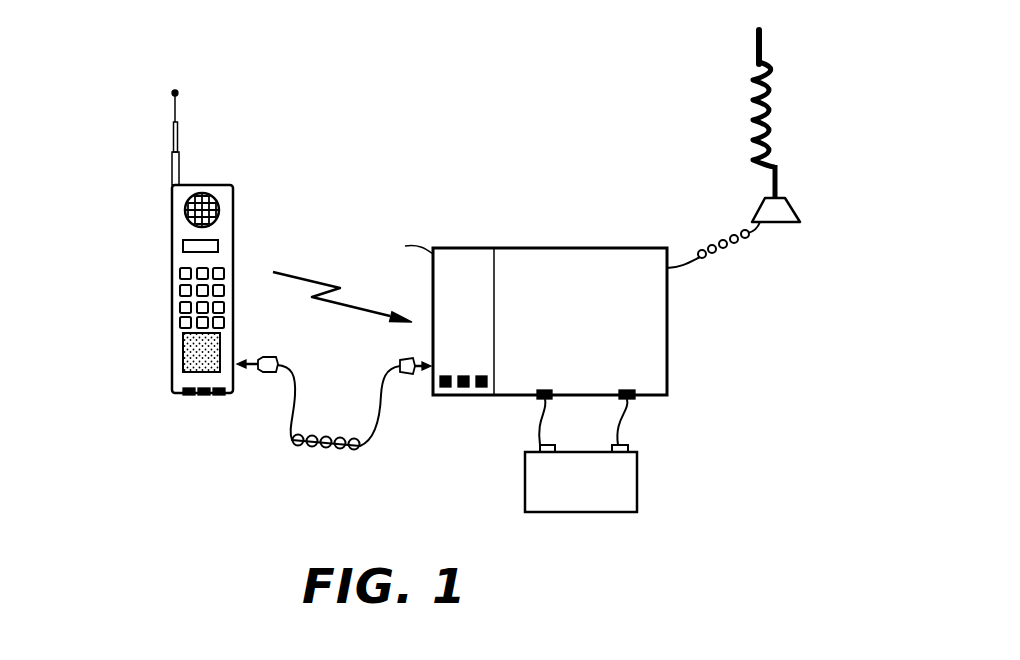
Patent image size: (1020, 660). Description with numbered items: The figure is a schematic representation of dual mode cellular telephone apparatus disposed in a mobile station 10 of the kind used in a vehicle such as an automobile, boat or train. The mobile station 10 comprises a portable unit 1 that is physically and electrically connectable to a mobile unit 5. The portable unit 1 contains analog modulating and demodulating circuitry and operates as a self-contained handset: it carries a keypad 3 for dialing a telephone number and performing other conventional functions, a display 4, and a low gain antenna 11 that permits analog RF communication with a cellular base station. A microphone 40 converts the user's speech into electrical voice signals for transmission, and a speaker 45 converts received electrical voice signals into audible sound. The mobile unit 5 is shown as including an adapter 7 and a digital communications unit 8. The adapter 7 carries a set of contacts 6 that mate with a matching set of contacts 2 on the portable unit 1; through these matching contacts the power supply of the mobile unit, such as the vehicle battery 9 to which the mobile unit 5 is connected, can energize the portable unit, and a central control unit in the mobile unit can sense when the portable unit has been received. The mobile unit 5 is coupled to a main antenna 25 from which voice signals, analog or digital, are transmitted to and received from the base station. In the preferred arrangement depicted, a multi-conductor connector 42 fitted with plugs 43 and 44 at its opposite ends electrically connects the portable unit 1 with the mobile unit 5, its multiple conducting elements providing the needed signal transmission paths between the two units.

The mobile station 10 is at (506, 105).
The portable unit 1 is at (254, 186).
The contacts 2 is at (197, 412).
The keypad 3 is at (237, 313).
The display 4 is at (218, 246).
The low gain antenna 11 is at (178, 145).
The speaker 45 is at (186, 212).
The microphone 40 is at (183, 357).
The plug 43 is at (262, 373).
The multi-conductor connector 42 is at (338, 450).
The plug 44 is at (405, 358).
The mobile unit 5 is at (583, 240).
The adapter 7 is at (472, 246).
The contacts 6 is at (462, 402).
The digital communications unit 8 is at (668, 388).
The vehicle battery 9 is at (637, 488).
The main antenna 25 is at (785, 140).